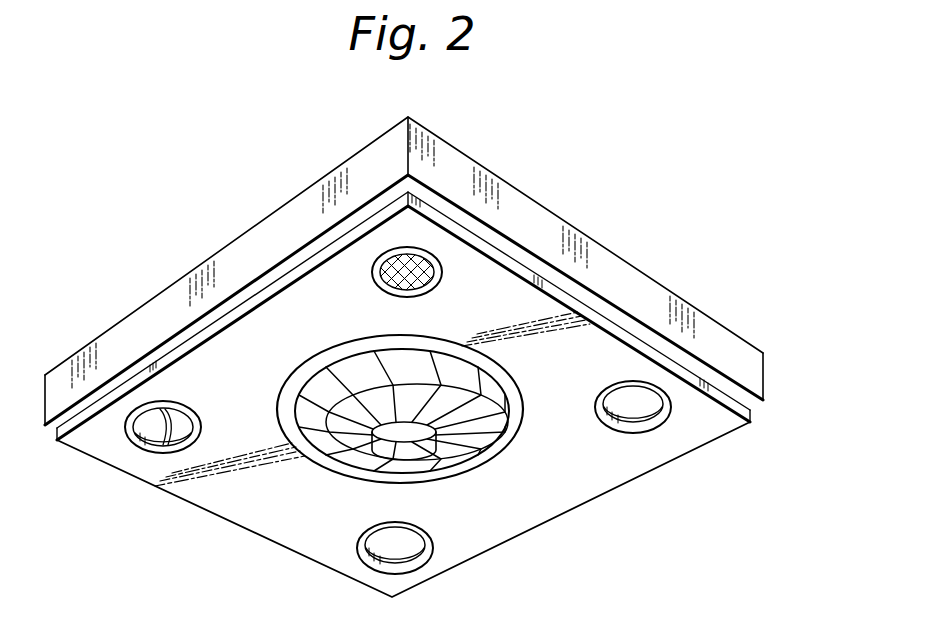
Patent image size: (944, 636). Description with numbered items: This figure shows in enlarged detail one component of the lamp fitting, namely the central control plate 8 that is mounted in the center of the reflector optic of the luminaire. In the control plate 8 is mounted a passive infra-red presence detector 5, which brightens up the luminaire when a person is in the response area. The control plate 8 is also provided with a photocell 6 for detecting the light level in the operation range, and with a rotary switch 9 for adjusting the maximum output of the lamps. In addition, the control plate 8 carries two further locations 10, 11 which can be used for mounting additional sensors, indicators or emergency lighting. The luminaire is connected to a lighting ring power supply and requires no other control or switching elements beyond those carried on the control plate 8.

The passive infra-red presence detector 5 is at (358, 336).
The photocell 6 is at (454, 279).
The central control plate 8 is at (603, 244).
The rotary switch 9 is at (188, 406).
The further location 10 is at (430, 537).
The further location 11 is at (606, 432).